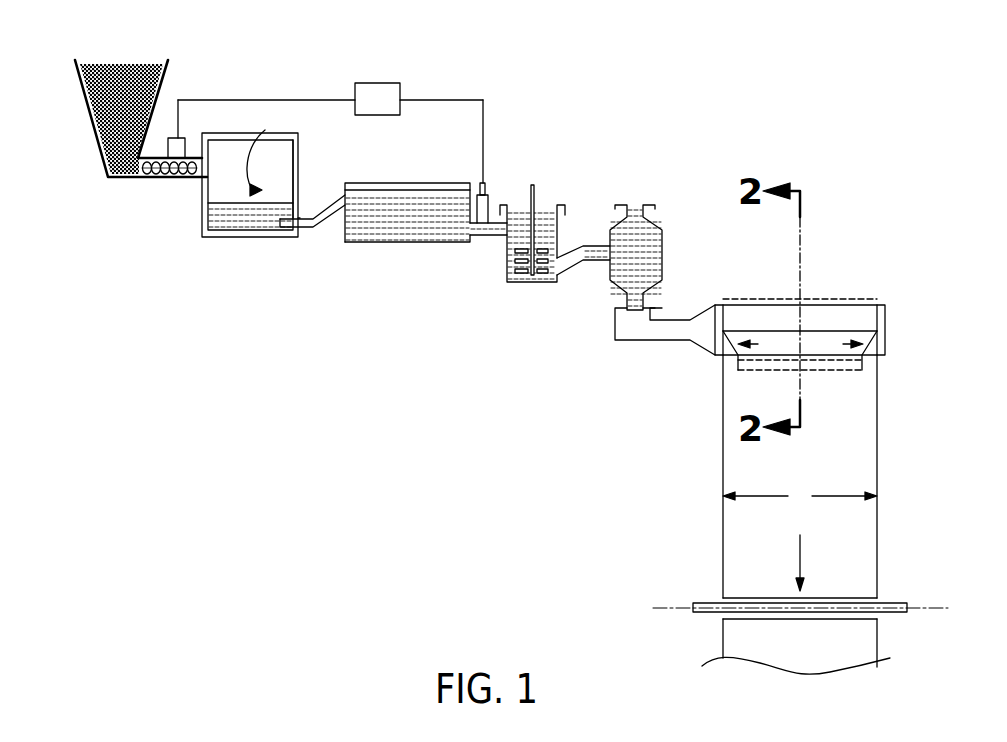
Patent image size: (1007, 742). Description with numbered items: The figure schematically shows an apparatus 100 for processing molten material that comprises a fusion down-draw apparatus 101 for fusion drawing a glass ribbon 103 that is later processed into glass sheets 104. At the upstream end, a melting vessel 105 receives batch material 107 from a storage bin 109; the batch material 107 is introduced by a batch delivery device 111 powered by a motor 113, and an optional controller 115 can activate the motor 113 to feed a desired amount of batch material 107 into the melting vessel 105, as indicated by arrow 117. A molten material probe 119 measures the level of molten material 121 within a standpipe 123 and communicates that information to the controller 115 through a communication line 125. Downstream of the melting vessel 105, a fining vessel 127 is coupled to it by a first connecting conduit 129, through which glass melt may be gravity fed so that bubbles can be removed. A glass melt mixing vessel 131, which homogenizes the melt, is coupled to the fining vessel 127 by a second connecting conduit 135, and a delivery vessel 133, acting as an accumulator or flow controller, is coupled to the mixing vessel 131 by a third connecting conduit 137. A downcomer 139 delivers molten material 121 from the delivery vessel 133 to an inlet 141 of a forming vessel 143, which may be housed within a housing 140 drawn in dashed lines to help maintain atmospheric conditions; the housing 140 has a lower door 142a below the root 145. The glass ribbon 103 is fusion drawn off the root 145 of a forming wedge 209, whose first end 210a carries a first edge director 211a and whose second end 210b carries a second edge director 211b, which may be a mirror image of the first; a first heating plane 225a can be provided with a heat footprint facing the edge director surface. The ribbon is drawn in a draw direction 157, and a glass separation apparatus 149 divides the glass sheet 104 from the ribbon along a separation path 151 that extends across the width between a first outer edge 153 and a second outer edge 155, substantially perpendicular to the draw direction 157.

The apparatus for processing molten material 100 is at (866, 86).
The fusion down-draw apparatus 101 is at (664, 139).
The glass ribbon 103 is at (799, 476).
The glass sheets 104 is at (853, 637).
The melting vessel 105 is at (240, 250).
The batch material 107 is at (110, 67).
The storage bin 109 is at (92, 125).
The batch delivery device 111 is at (170, 172).
The motor 113 is at (183, 137).
The controller 115 is at (375, 83).
The arrow 117 is at (250, 172).
The molten material probe 119 is at (482, 183).
The molten material 121 is at (270, 202).
The standpipe 123 is at (490, 205).
The communication line 125 is at (452, 100).
The fining vessel 127 is at (407, 183).
The first connecting conduit 129 is at (335, 203).
The glass melt mixing vessel 131 is at (567, 220).
The delivery vessel 133 is at (667, 232).
The second connecting conduit 135 is at (479, 240).
The third connecting conduit 137 is at (580, 265).
The downcomer 139 is at (647, 298).
The housing 140 is at (885, 282).
The inlet 141 is at (615, 328).
The lower door 142a is at (833, 363).
The forming vessel 143 is at (788, 303).
The root 145 is at (843, 360).
The glass separation apparatus 149 is at (903, 603).
The separation path 151 is at (667, 608).
The first outer edge 153 is at (723, 520).
The second outer edge 155 is at (877, 520).
The draw direction 157 is at (800, 545).
The forming wedge 209 is at (813, 338).
The first end 210a is at (733, 333).
The second end 210b is at (867, 335).
The first edge director 211a is at (760, 337).
The second edge director 211b is at (843, 337).
The first heating plane 225a is at (733, 360).